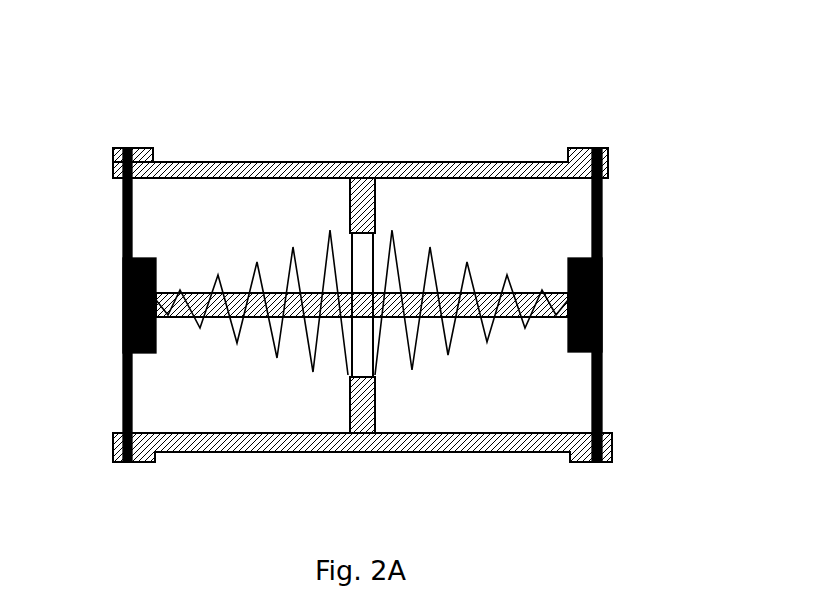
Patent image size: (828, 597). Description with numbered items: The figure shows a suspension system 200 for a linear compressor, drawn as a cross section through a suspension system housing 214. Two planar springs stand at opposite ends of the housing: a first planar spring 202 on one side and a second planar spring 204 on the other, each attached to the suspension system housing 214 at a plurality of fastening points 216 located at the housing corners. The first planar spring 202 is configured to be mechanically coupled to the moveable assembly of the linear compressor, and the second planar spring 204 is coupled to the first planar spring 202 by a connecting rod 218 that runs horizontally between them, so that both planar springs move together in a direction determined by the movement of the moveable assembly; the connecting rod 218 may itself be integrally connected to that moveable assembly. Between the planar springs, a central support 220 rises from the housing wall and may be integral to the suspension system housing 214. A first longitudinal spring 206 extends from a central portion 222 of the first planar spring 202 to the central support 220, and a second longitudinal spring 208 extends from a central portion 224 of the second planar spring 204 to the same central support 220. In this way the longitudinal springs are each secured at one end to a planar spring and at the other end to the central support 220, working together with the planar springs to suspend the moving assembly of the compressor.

The suspension system 200 is at (367, 269).
The first planar spring 202 is at (123, 232).
The second planar spring 204 is at (602, 210).
The first longitudinal spring 206 is at (288, 268).
The second longitudinal spring 208 is at (437, 268).
The suspension system housing 214 is at (225, 433).
The fastening points 216 is at (127, 147).
The connecting rod 218 is at (548, 320).
The central support 220 is at (376, 408).
The central portion of the first planar spring 222 is at (123, 308).
The central portion of the second planar spring 224 is at (602, 298).